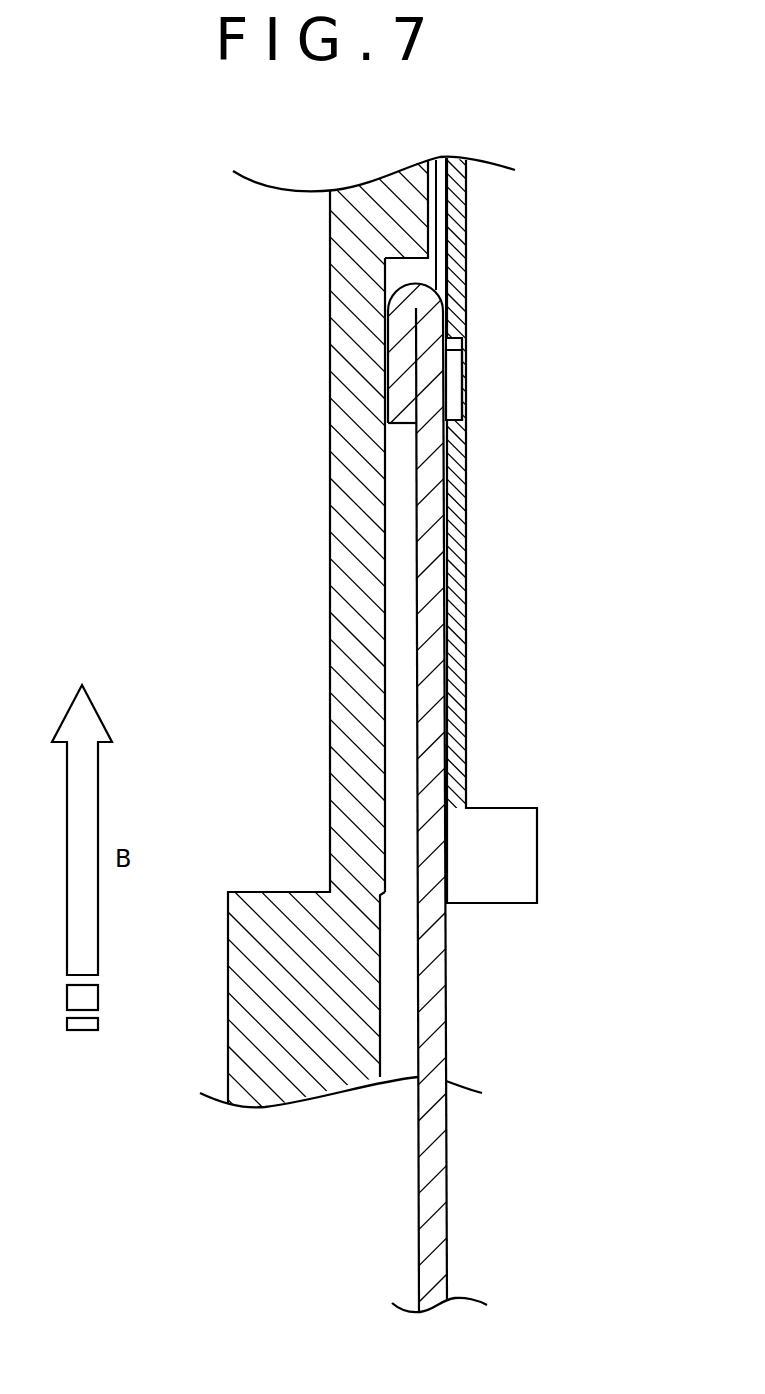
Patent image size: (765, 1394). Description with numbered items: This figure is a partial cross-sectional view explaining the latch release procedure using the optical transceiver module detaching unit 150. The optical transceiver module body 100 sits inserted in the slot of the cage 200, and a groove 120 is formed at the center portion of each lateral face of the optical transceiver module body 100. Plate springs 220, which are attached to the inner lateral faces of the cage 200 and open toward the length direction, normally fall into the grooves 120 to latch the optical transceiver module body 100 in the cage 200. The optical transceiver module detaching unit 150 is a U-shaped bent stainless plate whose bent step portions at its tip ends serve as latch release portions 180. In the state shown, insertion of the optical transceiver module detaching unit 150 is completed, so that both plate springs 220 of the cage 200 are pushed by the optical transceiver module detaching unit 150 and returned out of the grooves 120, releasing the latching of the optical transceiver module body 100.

The optical transceiver module body 100 is at (365, 503).
The groove 120 is at (402, 676).
The optical transceiver module detaching unit 150 is at (432, 1053).
The latch release portion 180 is at (428, 405).
The cage 200 is at (517, 878).
The plate spring 220 is at (453, 372).